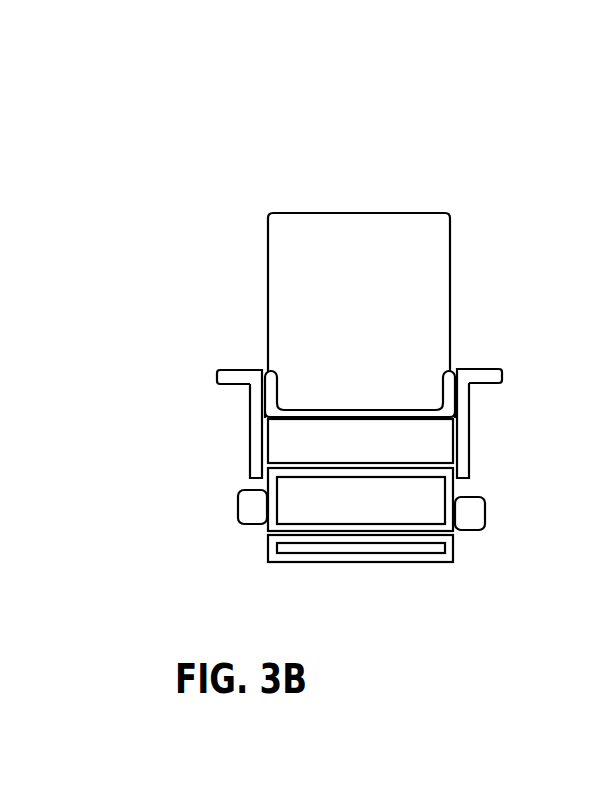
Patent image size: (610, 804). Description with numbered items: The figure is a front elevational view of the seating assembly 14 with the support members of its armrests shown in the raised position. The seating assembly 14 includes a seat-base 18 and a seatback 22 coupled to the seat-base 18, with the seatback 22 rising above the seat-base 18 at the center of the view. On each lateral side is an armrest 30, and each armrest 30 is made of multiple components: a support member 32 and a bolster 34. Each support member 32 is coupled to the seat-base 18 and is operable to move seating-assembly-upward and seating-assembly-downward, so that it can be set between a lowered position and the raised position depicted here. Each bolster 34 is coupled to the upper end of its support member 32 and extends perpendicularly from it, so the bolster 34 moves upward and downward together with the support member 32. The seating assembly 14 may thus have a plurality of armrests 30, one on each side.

The seating assembly 14 is at (324, 158).
The seatback 22 is at (387, 260).
The seat-base 18 is at (364, 452).
The armrest 30 is at (212, 375).
The support member 32 is at (255, 398).
The bolster 34 is at (233, 379).